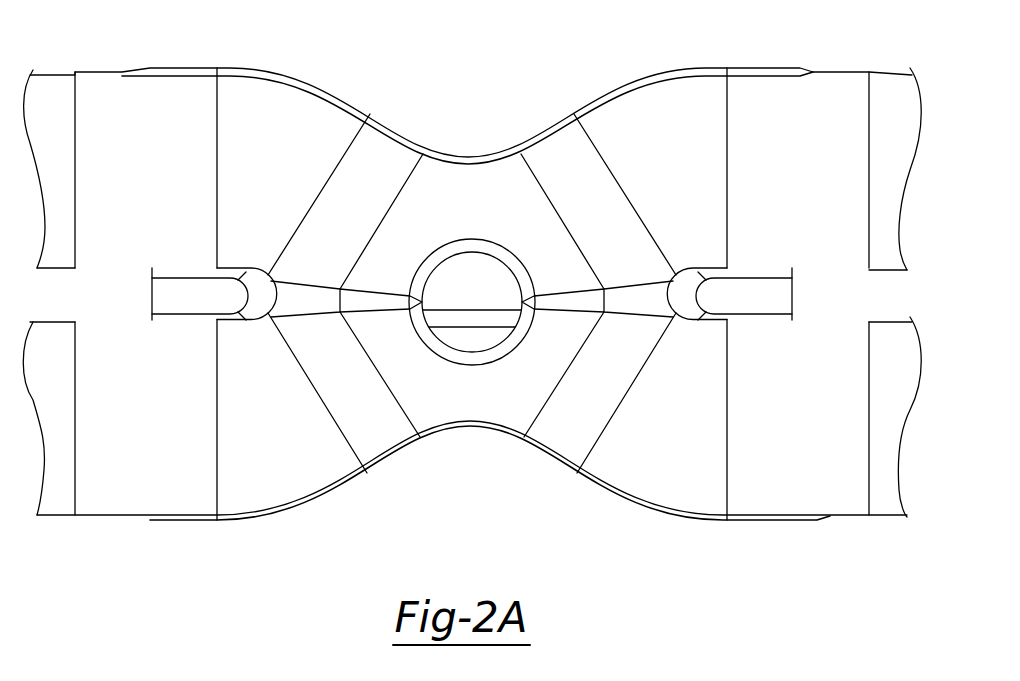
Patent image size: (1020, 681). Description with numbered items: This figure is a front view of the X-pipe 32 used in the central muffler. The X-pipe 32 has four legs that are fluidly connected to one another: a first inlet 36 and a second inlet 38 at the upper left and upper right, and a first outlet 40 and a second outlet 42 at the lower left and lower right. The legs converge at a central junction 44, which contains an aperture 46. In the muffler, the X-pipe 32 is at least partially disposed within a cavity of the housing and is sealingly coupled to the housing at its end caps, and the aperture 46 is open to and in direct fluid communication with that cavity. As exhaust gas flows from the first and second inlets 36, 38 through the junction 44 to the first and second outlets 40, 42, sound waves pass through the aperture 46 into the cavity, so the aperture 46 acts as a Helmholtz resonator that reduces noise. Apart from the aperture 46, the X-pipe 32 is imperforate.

The X-pipe 32 is at (765, 47).
The first inlet 36 is at (75, 153).
The second inlet 38 is at (869, 167).
The first outlet 40 is at (75, 457).
The second outlet 42 is at (868, 438).
The junction 44 is at (460, 230).
The aperture 46 is at (493, 284).